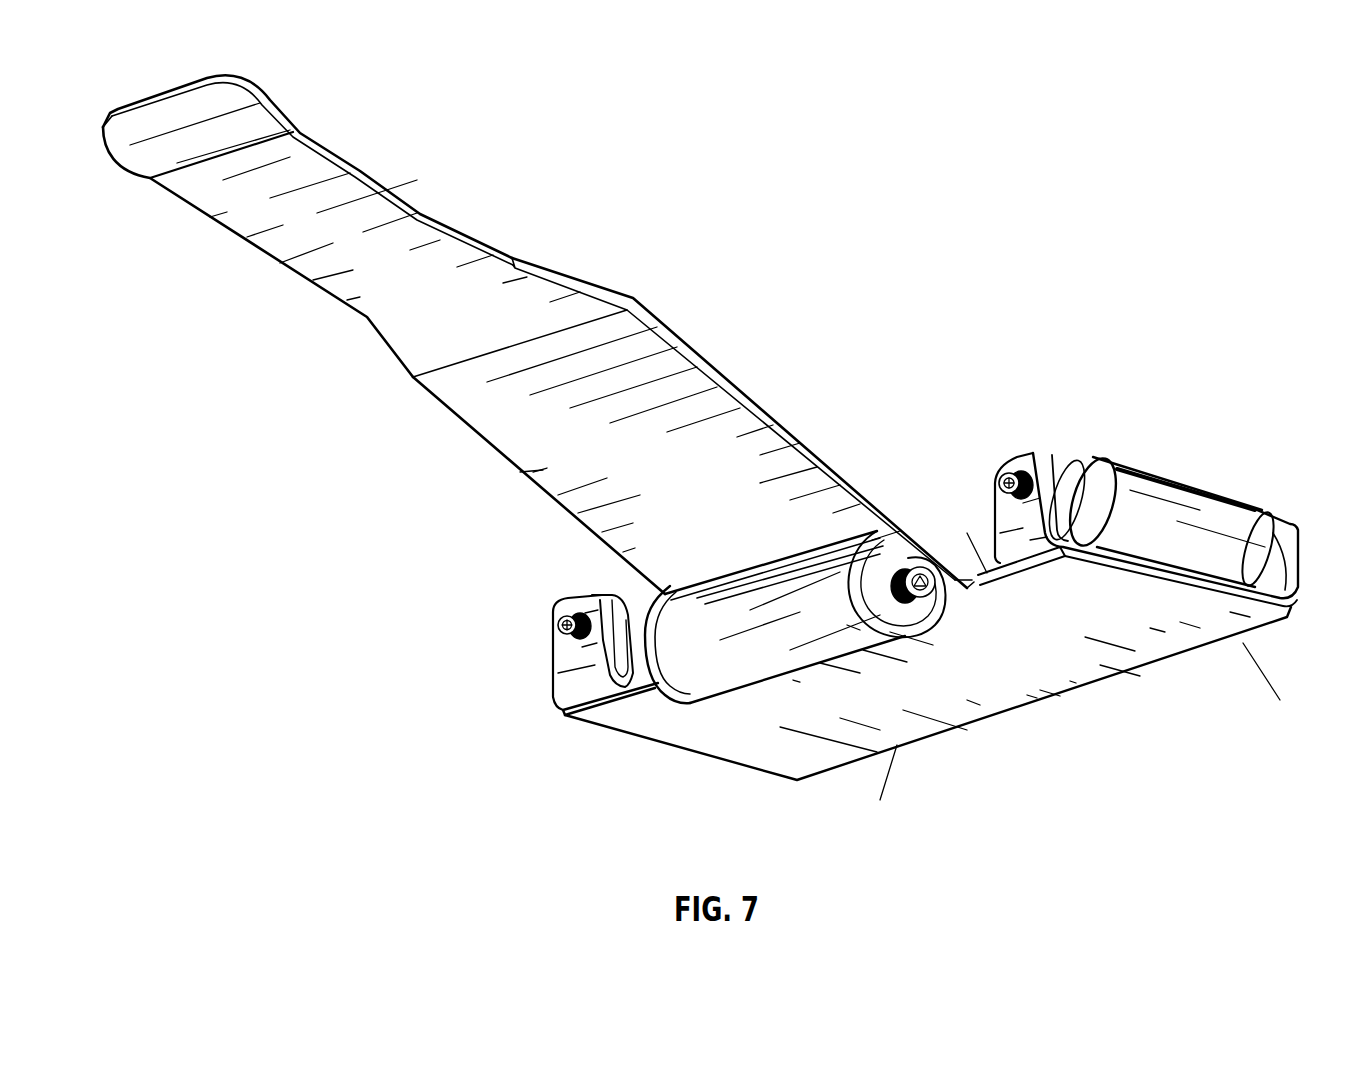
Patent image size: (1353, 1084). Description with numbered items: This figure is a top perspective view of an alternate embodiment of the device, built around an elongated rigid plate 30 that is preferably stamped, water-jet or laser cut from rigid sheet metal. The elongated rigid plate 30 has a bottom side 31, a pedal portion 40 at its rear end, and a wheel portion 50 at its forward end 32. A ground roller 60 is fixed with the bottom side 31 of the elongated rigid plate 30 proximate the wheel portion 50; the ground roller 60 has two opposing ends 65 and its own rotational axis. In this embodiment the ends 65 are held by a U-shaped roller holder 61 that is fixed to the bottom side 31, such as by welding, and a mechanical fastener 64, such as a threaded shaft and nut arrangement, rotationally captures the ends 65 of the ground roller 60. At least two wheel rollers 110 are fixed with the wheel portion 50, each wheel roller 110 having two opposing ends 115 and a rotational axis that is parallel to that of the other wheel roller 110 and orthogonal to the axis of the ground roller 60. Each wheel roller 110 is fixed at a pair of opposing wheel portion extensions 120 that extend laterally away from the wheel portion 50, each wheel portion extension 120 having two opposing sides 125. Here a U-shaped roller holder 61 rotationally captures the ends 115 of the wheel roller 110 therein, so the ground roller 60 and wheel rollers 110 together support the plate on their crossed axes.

The elongated rigid plate 30 is at (663, 330).
The bottom side 31 is at (560, 437).
The forward end 32 is at (1073, 697).
The pedal portion 40 is at (346, 243).
The wheel portion 50 is at (980, 683).
The ground roller 60 is at (708, 668).
The U-shaped roller holder 61 is at (563, 658).
The mechanical fastener 64 is at (913, 560).
The opposing ends 65 is at (817, 583).
The wheel roller 110 is at (1173, 483).
The opposing ends 115 is at (1053, 452).
The wheel portion extension 120 is at (762, 713).
The opposing sides 125 is at (897, 745).